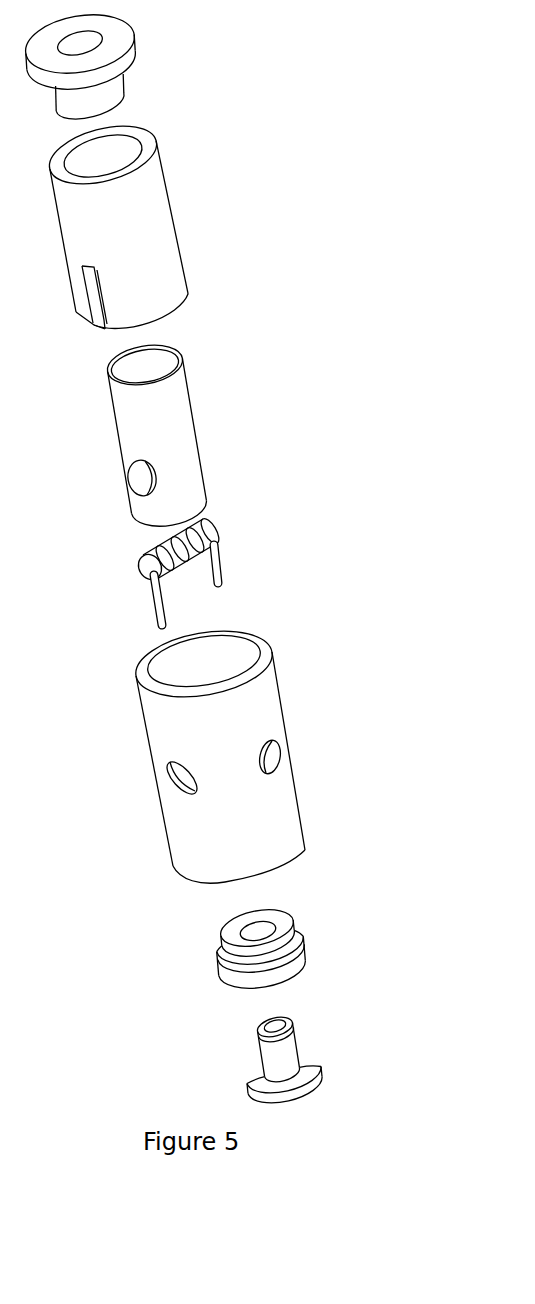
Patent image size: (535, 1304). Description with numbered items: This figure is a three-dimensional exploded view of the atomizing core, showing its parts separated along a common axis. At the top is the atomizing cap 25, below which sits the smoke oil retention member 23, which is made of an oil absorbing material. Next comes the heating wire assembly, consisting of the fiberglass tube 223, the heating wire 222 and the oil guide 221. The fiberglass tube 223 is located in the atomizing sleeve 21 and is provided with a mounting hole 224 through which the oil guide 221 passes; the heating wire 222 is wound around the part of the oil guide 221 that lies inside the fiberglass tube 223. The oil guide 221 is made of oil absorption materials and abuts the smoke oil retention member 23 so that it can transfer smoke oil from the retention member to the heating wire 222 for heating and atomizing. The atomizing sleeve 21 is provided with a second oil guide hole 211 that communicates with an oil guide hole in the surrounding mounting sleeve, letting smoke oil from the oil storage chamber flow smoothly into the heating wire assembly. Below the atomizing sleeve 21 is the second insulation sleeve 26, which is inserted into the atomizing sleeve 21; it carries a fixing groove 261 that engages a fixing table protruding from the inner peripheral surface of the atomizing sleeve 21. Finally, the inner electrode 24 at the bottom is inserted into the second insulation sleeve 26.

The atomizing cap 25 is at (133, 63).
The smoke oil retention member 23 is at (157, 222).
The fiberglass tube 223 is at (203, 433).
The mounting hole 224 is at (213, 478).
The heating wire 222 is at (228, 550).
The oil guide 221 is at (241, 585).
The atomizing sleeve 21 is at (258, 752).
The second oil guide hole 211 is at (279, 768).
The second insulation sleeve 26 is at (311, 946).
The fixing groove 261 is at (189, 958).
The inner electrode 24 is at (327, 1058).